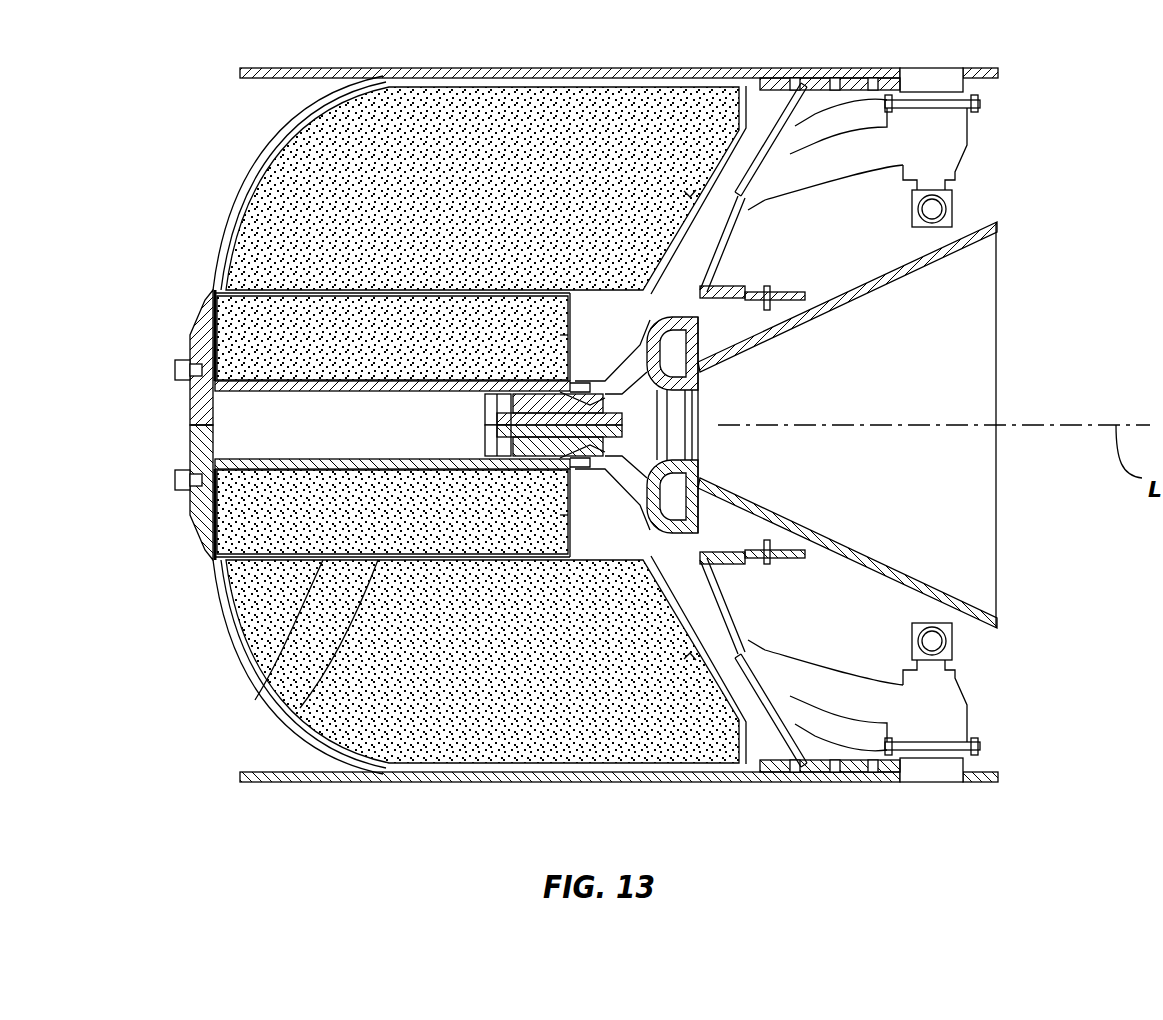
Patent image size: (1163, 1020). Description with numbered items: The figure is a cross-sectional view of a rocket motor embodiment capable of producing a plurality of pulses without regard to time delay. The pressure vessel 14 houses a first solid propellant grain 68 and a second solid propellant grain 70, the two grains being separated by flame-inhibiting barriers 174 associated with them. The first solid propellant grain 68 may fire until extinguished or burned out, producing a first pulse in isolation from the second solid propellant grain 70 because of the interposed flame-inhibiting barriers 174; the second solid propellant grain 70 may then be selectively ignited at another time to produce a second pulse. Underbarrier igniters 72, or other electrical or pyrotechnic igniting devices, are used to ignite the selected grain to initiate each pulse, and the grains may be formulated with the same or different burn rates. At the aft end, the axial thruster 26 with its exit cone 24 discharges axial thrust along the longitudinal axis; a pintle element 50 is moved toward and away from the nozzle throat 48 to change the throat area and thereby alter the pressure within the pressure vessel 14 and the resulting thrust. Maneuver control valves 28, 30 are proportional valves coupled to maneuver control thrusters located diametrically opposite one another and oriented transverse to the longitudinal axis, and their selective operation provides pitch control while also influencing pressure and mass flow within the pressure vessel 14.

The pressure vessel 14 is at (213, 572).
The exit cone 24 is at (980, 283).
The axial thruster 26 is at (997, 623).
The maneuver control valve 28 is at (947, 217).
The maneuver control valve 30 is at (935, 640).
The nozzle throat 48 is at (664, 407).
The pintle element 50 is at (660, 445).
The first solid propellant grain 68 is at (255, 333).
The second solid propellant grain 70 is at (542, 150).
The underbarrier igniters 72 is at (688, 193).
The flame-inhibiting barriers 174 is at (257, 703).